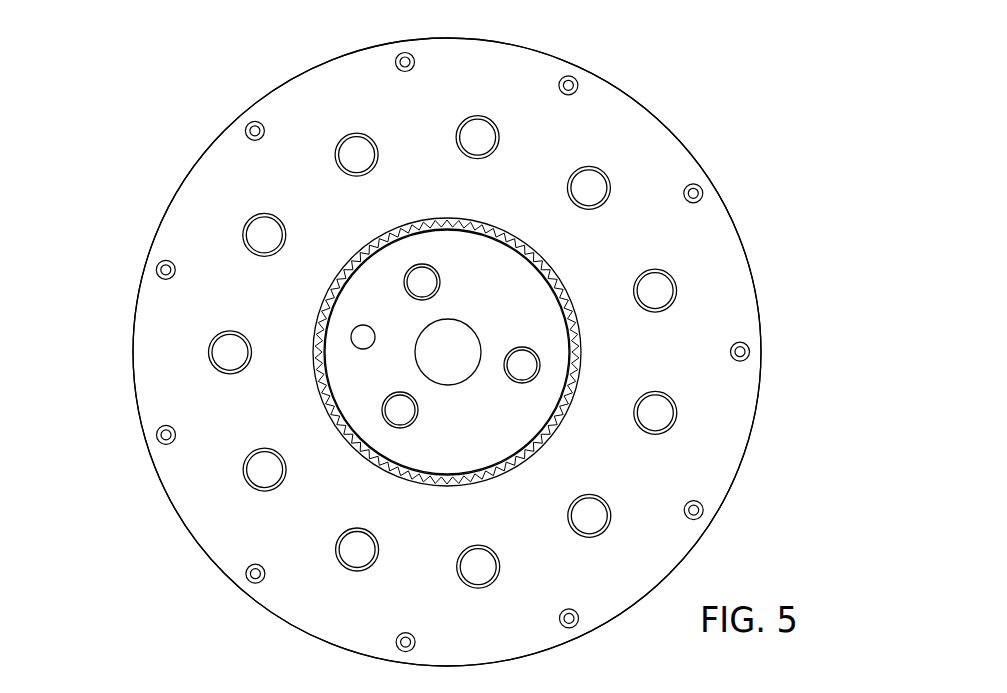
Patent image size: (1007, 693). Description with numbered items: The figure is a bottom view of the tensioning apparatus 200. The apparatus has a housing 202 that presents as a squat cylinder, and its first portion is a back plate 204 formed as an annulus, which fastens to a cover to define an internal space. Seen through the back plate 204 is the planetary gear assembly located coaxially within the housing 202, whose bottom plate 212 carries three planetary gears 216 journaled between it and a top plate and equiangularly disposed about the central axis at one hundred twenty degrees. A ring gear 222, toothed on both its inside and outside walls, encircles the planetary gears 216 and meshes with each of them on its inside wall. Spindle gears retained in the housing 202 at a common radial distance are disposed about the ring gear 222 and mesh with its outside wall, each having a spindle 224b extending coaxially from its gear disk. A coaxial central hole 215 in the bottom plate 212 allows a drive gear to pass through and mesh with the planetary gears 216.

The tensioning apparatus 200 is at (152, 160).
The housing 202 is at (722, 423).
The back plate 204 is at (131, 338).
The bottom plate 212 is at (516, 301).
The central hole 215 is at (454, 352).
The planetary gears 216 is at (423, 282).
The ring gear 222 is at (487, 226).
The spindle 224b is at (657, 295).